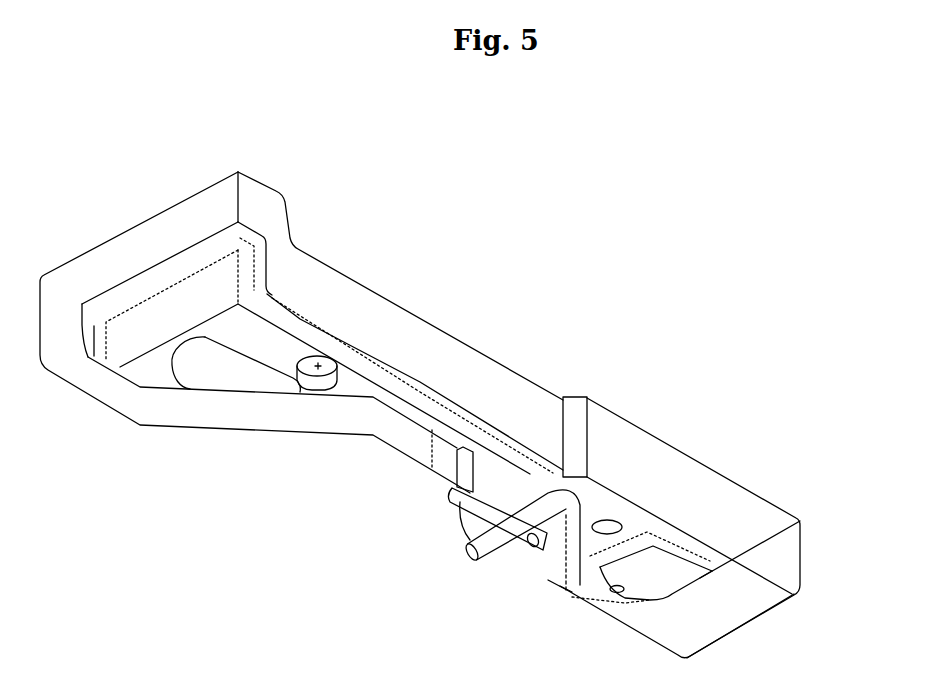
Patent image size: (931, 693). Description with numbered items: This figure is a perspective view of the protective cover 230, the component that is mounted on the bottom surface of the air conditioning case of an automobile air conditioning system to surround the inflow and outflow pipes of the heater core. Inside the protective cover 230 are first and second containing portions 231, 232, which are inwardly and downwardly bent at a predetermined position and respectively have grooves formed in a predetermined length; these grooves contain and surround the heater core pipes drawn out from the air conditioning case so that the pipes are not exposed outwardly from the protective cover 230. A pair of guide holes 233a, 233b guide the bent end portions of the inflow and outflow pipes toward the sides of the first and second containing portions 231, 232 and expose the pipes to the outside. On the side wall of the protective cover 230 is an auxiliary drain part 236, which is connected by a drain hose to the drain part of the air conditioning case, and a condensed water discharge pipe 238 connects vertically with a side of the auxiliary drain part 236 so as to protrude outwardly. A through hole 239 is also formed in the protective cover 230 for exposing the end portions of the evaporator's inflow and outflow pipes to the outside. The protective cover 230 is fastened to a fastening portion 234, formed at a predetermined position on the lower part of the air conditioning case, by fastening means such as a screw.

The protective cover 230 is at (570, 350).
The first containing portion 231 is at (327, 350).
The second containing portion 232 is at (102, 350).
The guide hole 233a is at (608, 518).
The guide hole 233b is at (523, 553).
The fastening portion 234 is at (318, 372).
The auxiliary drain part 236 is at (469, 558).
The condensed water discharge pipe 238 is at (567, 593).
The through hole 239 is at (663, 573).